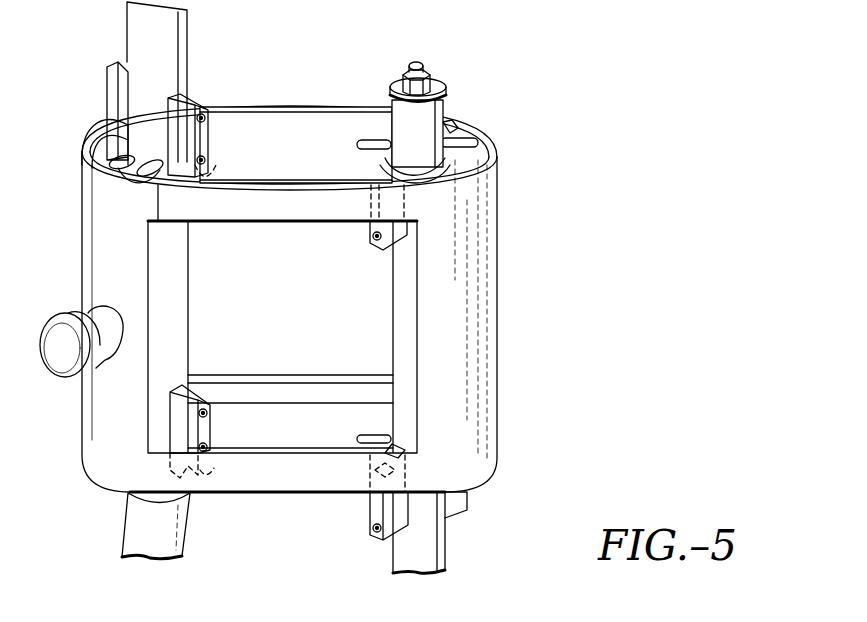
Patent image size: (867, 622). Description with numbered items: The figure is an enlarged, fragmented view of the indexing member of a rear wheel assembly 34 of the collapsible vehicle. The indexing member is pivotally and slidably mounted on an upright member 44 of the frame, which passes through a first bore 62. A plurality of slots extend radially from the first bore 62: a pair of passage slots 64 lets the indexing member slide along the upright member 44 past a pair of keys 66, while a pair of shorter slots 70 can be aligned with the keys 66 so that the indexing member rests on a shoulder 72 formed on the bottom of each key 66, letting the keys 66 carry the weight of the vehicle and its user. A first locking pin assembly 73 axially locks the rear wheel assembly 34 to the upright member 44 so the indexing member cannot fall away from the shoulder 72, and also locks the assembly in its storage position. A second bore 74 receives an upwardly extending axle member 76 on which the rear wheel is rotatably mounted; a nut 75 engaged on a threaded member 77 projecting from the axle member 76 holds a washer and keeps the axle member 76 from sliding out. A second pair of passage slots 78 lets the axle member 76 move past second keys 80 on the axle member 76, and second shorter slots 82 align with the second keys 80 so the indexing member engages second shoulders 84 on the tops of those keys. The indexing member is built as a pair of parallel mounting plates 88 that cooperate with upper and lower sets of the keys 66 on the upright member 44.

The rear wheel assembly 34 is at (527, 262).
The upright member 44 is at (166, 40).
The first bore 62 is at (148, 170).
The passage slots 64 is at (118, 160).
The keys 66 is at (115, 90).
The shorter slots 70 is at (118, 133).
The shoulder 72 is at (214, 168).
The first locking pin assembly 73 is at (64, 355).
The second bore 74 is at (428, 168).
The nut 75 is at (436, 80).
The axle member 76 is at (430, 138).
The threaded member 77 is at (417, 62).
The second pair of passage slots 78 is at (372, 140).
The second keys 80 is at (388, 242).
The second shorter slots 82 is at (454, 124).
The second shoulders 84 is at (366, 192).
The mounting plates 88 is at (297, 150).